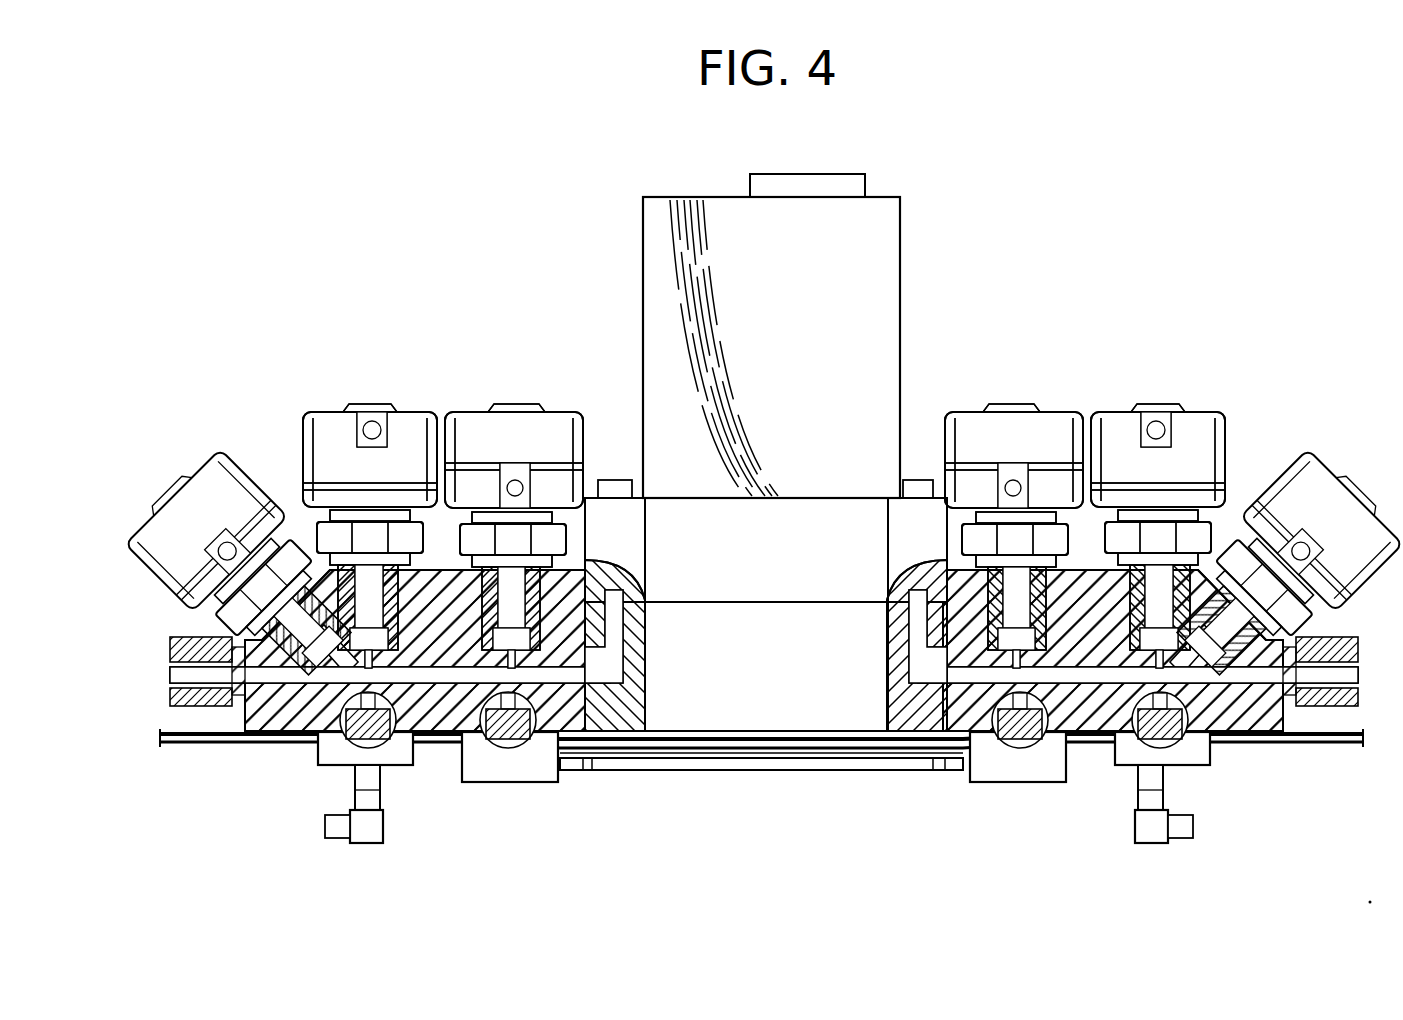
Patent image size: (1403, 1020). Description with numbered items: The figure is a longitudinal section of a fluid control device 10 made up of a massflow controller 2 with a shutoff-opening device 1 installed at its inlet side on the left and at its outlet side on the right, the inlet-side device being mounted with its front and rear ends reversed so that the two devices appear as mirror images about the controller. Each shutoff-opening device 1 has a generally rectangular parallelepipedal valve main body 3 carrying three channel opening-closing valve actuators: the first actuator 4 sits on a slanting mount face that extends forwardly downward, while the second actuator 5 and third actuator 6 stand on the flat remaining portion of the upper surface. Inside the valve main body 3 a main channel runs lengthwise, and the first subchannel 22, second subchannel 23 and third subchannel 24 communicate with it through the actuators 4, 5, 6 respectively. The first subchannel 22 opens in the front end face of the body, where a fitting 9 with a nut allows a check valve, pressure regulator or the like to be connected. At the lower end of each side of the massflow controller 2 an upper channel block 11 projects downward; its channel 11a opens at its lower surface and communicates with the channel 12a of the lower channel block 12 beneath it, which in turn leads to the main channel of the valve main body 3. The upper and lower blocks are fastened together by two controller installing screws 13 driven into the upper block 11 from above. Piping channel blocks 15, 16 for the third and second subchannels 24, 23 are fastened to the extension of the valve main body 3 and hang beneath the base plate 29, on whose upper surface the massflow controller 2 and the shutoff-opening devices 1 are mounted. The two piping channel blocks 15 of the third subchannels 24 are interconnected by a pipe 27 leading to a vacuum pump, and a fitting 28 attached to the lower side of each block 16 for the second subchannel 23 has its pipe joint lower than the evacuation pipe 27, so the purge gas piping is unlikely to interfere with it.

The shutoff-opening device 1 is at (455, 396).
The massflow controller 2 is at (880, 258).
The valve main body 3 is at (445, 702).
The first channel opening-closing valve actuator 4 is at (210, 462).
The second channel opening-closing valve actuator 5 is at (327, 432).
The third channel opening-closing valve actuator 6 is at (556, 432).
The fitting 9 is at (185, 640).
The fluid control device 10 is at (1066, 290).
The upper channel block 11 is at (628, 528).
The channel 11a is at (650, 592).
The lower channel block 12 is at (620, 708).
The channel 12a is at (645, 653).
The controller installing screws 13 is at (620, 480).
The piping channel block 15 is at (497, 777).
The piping channel block 16 is at (395, 792).
The first subchannel 22 is at (272, 680).
The second subchannel 23 is at (330, 740).
The third subchannel 24 is at (550, 766).
The pipe 27 is at (765, 770).
The fitting 28 is at (350, 828).
The base plate 29 is at (1330, 748).